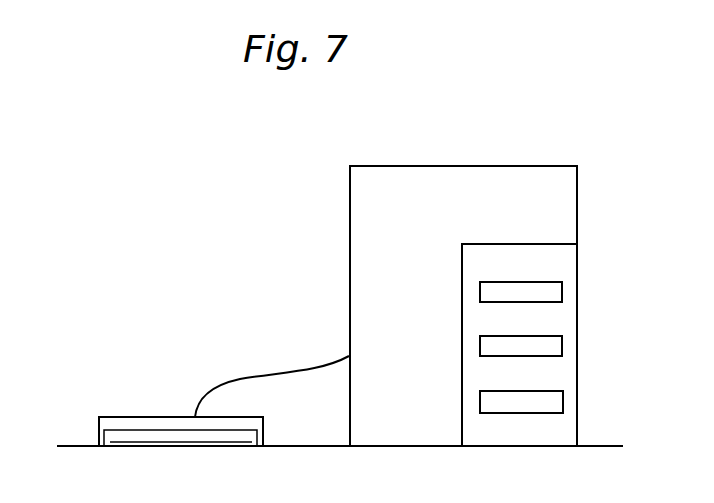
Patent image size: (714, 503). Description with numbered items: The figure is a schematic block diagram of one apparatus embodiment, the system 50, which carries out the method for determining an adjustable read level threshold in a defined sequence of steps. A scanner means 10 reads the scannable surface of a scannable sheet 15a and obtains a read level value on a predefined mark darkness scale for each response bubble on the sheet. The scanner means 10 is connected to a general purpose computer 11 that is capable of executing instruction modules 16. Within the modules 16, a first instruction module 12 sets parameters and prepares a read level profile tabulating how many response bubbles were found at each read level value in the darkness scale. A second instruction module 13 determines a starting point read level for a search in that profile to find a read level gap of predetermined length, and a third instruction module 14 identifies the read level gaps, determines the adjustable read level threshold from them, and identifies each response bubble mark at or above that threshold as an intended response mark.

The scanner means 10 is at (160, 405).
The general purpose computer 11 is at (375, 184).
The first instruction module 12 is at (556, 291).
The second instruction module 13 is at (558, 346).
The third instruction module 14 is at (558, 401).
The scannable sheet 15a is at (118, 442).
The instruction modules 16 is at (540, 251).
The system 50 is at (280, 276).